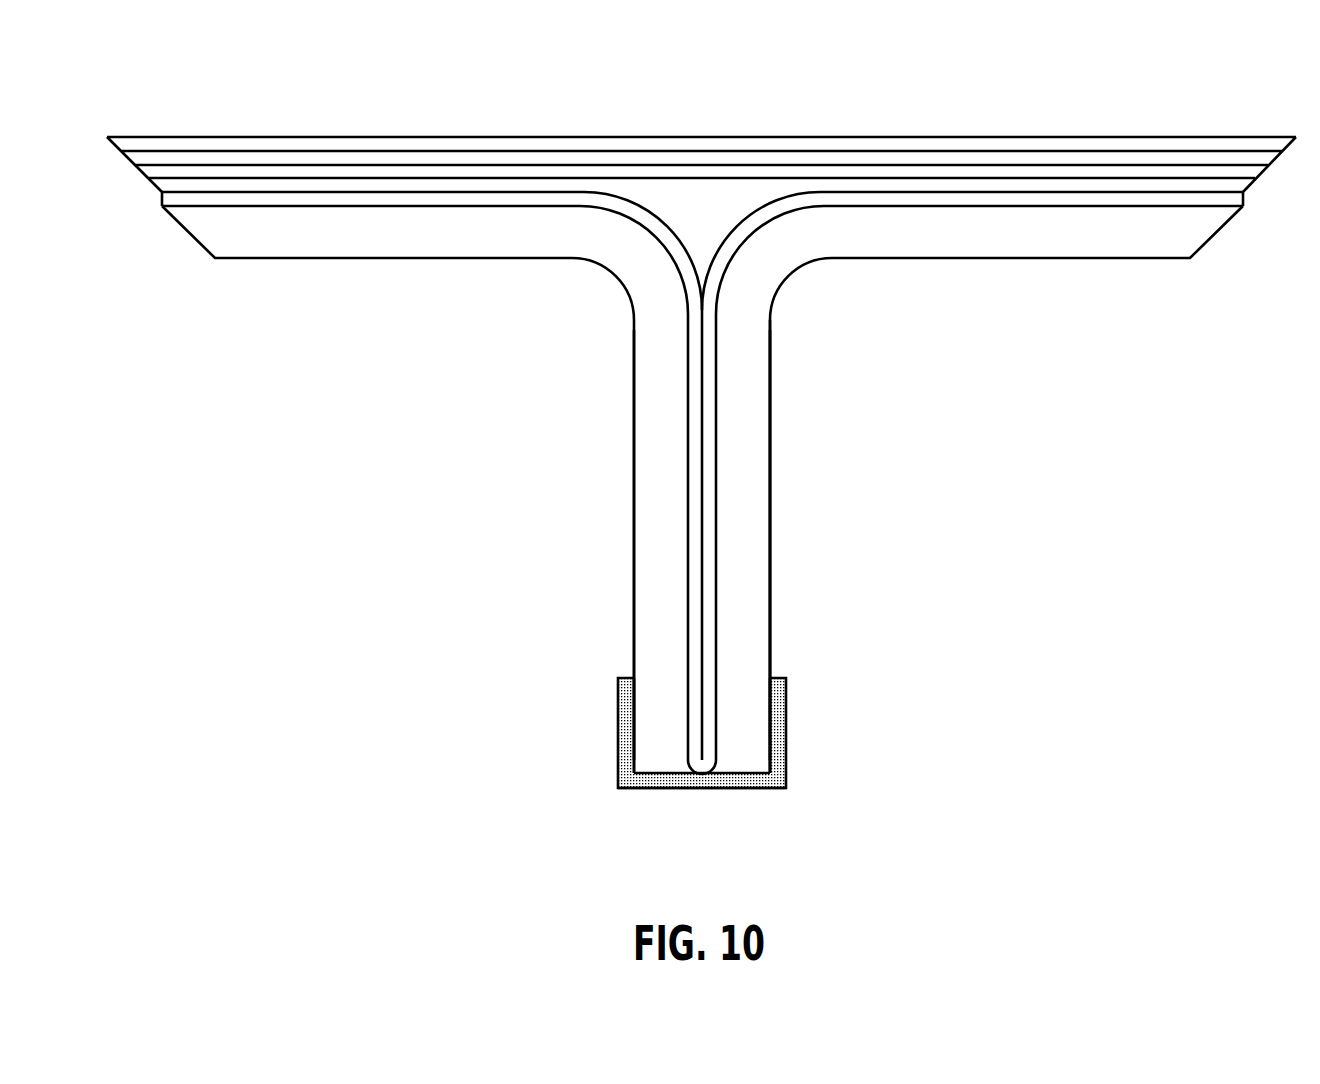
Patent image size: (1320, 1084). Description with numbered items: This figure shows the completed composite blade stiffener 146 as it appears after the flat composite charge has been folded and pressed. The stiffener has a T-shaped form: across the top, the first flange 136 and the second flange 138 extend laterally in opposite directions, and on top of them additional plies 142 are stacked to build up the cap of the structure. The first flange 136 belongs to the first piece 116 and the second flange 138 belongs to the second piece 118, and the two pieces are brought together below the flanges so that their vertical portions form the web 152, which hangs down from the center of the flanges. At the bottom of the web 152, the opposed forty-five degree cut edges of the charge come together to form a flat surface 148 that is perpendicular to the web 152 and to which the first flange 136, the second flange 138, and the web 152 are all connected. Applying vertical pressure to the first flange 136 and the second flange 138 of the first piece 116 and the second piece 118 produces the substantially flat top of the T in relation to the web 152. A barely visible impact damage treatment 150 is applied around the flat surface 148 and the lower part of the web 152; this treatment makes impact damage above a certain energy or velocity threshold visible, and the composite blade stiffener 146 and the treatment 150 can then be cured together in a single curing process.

The composite blade stiffener 146 is at (396, 75).
The additional plies 142 is at (795, 163).
The first flange 136 is at (372, 245).
The second flange 138 is at (1020, 245).
The first piece 116 is at (648, 585).
The second piece 118 is at (758, 585).
The web 152 is at (794, 484).
The barely visible impact damage (BVID) treatment 150 is at (787, 742).
The flat surface 148 is at (741, 775).